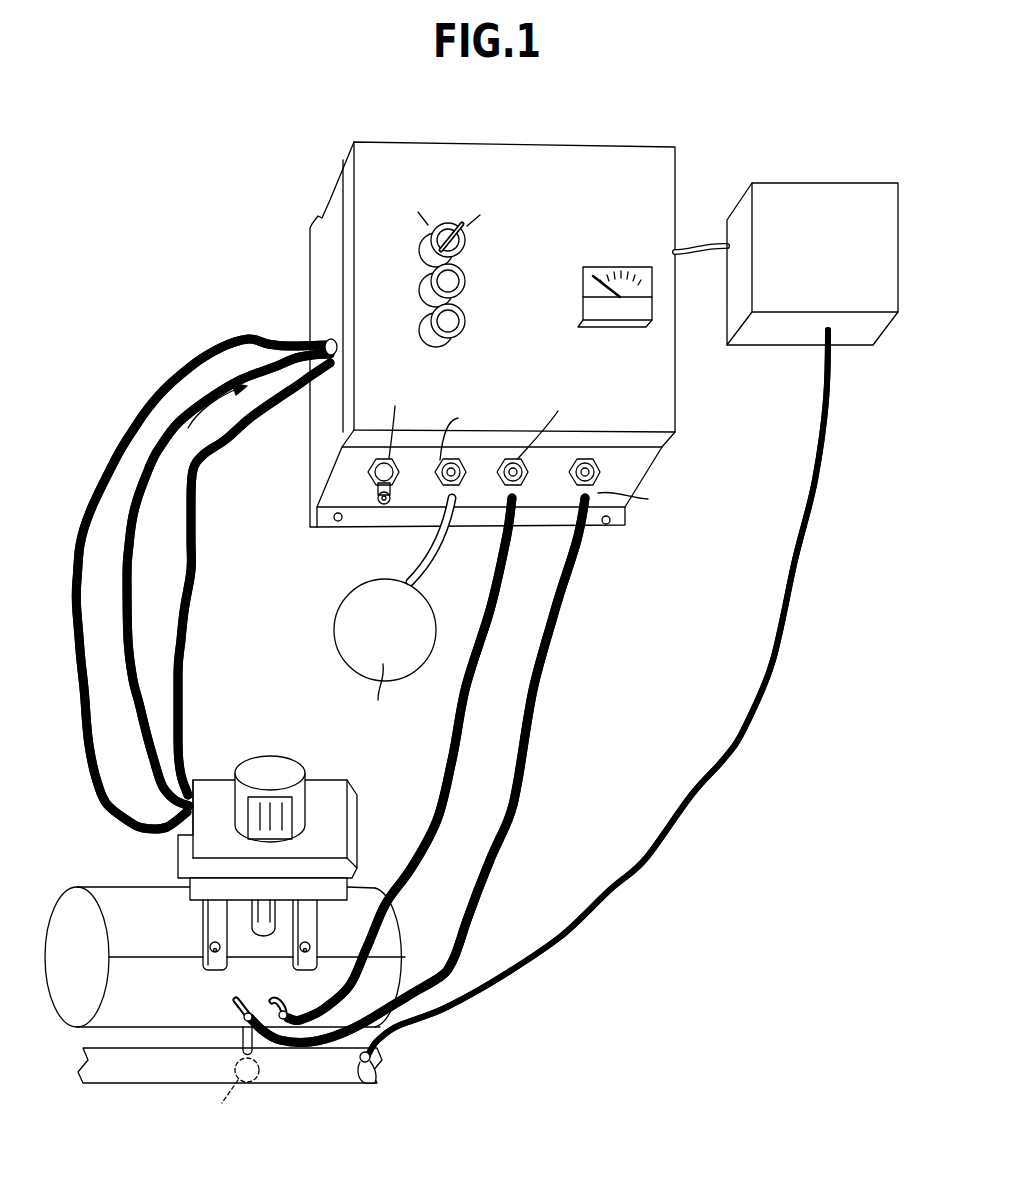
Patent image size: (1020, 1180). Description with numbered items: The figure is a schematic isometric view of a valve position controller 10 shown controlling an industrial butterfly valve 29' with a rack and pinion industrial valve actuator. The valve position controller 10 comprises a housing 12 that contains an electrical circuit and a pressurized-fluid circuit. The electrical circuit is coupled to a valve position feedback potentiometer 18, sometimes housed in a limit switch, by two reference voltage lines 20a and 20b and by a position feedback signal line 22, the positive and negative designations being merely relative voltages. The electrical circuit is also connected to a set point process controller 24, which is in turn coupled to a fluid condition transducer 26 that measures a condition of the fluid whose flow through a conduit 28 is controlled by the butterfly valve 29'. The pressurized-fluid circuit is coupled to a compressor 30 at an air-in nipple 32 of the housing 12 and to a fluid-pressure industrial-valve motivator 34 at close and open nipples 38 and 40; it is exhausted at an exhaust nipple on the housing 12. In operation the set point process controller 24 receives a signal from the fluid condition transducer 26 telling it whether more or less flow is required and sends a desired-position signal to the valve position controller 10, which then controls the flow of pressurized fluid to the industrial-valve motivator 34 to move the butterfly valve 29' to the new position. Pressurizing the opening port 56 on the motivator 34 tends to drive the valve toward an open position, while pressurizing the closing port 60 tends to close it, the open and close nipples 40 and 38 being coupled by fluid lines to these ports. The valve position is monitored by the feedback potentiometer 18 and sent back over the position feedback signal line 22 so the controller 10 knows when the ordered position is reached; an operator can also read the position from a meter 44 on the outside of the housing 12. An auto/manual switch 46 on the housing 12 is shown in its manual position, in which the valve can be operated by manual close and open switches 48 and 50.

The valve position controller 10 is at (494, 309).
The housing 12 is at (535, 150).
The valve position feedback potentiometer 18 is at (355, 768).
The reference voltage line 20a is at (92, 770).
The reference voltage line 20b is at (186, 657).
The position feedback signal line 22 is at (130, 563).
The set point process controller 24 is at (842, 193).
The fluid condition transducer 26 is at (368, 1082).
The conduit 28 is at (128, 1084).
The butterfly valve 29' is at (232, 1078).
The compressor 30 is at (368, 580).
The air-in nipple 32 is at (475, 498).
The fluid-pressure industrial-valve motivator 34 is at (80, 898).
The close nipple 38 is at (538, 498).
The open nipple 40 is at (600, 478).
The meter 44 is at (607, 264).
The auto/manual switch 46 is at (466, 243).
The manual close switch 48 is at (431, 322).
The manual open switch 50 is at (431, 282).
The opening port 56 is at (236, 1003).
The closing port 60 is at (278, 1000).